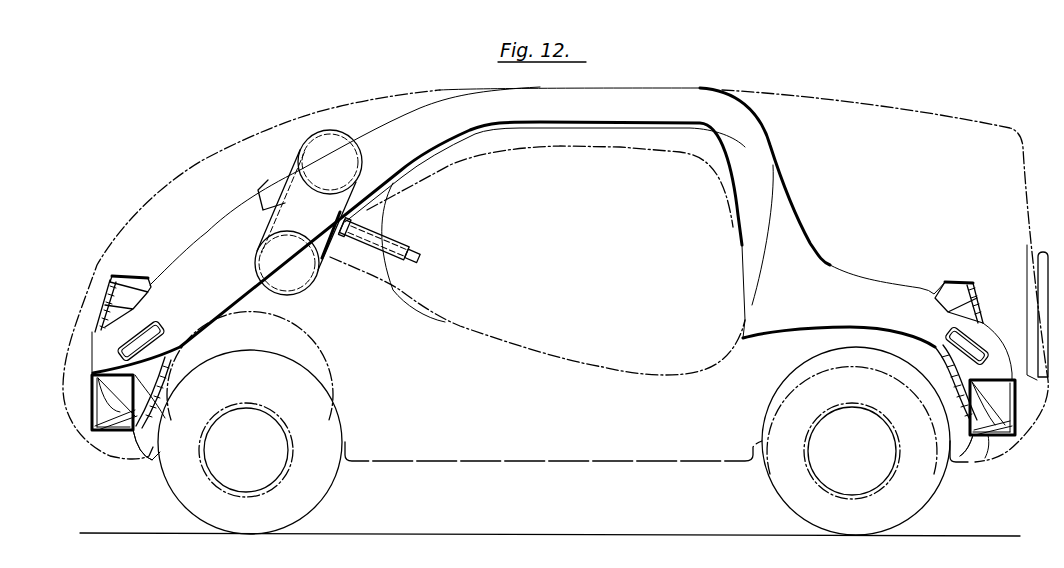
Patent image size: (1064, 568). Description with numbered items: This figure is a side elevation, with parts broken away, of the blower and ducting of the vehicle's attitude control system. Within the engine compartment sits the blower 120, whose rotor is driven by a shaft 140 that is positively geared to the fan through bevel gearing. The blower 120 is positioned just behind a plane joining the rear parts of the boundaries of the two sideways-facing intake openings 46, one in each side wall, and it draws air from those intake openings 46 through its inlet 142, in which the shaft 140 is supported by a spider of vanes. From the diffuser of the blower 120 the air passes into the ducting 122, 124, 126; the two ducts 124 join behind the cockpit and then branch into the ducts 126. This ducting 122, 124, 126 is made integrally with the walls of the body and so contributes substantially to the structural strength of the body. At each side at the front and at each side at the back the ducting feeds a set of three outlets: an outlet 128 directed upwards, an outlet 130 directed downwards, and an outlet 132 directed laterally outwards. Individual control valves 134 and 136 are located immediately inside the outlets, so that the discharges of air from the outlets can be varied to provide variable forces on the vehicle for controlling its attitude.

The intake openings 46 is at (466, 305).
The blower 120 is at (325, 138).
The ducting 122 is at (218, 224).
The ducting 124 is at (605, 90).
The ducting 126 is at (843, 290).
The upwardly directed outlet 128 is at (125, 276).
The downwardly directed outlet 130 is at (133, 450).
The laterally outward directed outlet 132 is at (157, 327).
The control valve 134 is at (105, 297).
The control valve 136 is at (112, 433).
The shaft 140 is at (423, 255).
The inlet 142 is at (388, 199).